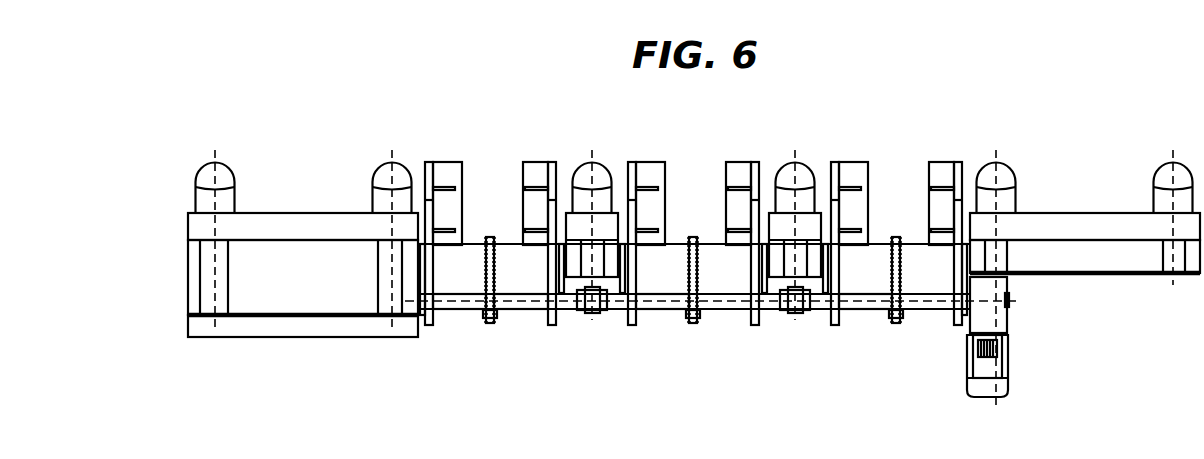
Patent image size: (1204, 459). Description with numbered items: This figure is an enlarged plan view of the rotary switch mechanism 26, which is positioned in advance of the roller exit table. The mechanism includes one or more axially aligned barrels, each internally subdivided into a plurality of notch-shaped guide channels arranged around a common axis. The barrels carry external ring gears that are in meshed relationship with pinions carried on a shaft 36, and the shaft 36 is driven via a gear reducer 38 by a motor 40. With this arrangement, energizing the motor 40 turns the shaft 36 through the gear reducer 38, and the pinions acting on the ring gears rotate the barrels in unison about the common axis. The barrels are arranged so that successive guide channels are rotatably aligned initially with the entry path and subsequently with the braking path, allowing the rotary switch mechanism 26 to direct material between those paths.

The rotary switch mechanism 26 is at (853, 109).
The shaft 36 is at (520, 309).
The gear reducer 38 is at (1005, 312).
The motor 40 is at (997, 388).